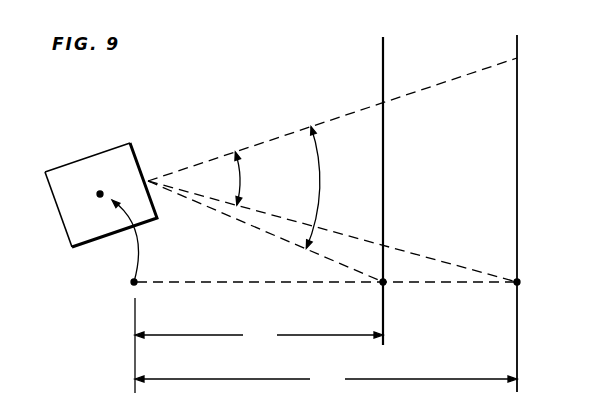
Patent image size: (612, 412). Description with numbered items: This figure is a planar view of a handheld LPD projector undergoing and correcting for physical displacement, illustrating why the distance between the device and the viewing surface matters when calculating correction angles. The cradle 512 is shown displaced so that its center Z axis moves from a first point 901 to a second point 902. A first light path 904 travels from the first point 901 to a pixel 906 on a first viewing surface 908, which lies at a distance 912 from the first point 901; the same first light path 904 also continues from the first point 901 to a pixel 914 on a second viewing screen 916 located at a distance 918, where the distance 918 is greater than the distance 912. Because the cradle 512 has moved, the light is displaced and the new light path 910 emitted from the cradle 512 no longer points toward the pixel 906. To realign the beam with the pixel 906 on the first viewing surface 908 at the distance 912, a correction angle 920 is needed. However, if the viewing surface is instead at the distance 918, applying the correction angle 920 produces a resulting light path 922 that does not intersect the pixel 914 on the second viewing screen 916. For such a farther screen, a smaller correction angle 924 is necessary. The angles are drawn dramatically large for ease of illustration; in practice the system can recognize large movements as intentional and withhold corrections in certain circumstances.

The cradle 512 is at (62, 167).
The first point 901 is at (131, 282).
The second point 902 is at (100, 192).
The first light path 904 is at (190, 284).
The pixel 906 is at (386, 284).
The first viewing surface 908 is at (384, 157).
The new light path 910 is at (352, 112).
The distance 912 is at (259, 337).
The pixel 914 is at (520, 281).
The second viewing screen 916 is at (518, 172).
The distance 918 is at (326, 380).
The correction angle 920 is at (324, 185).
The resulting light path 922 is at (277, 234).
The correction angle 924 is at (246, 176).